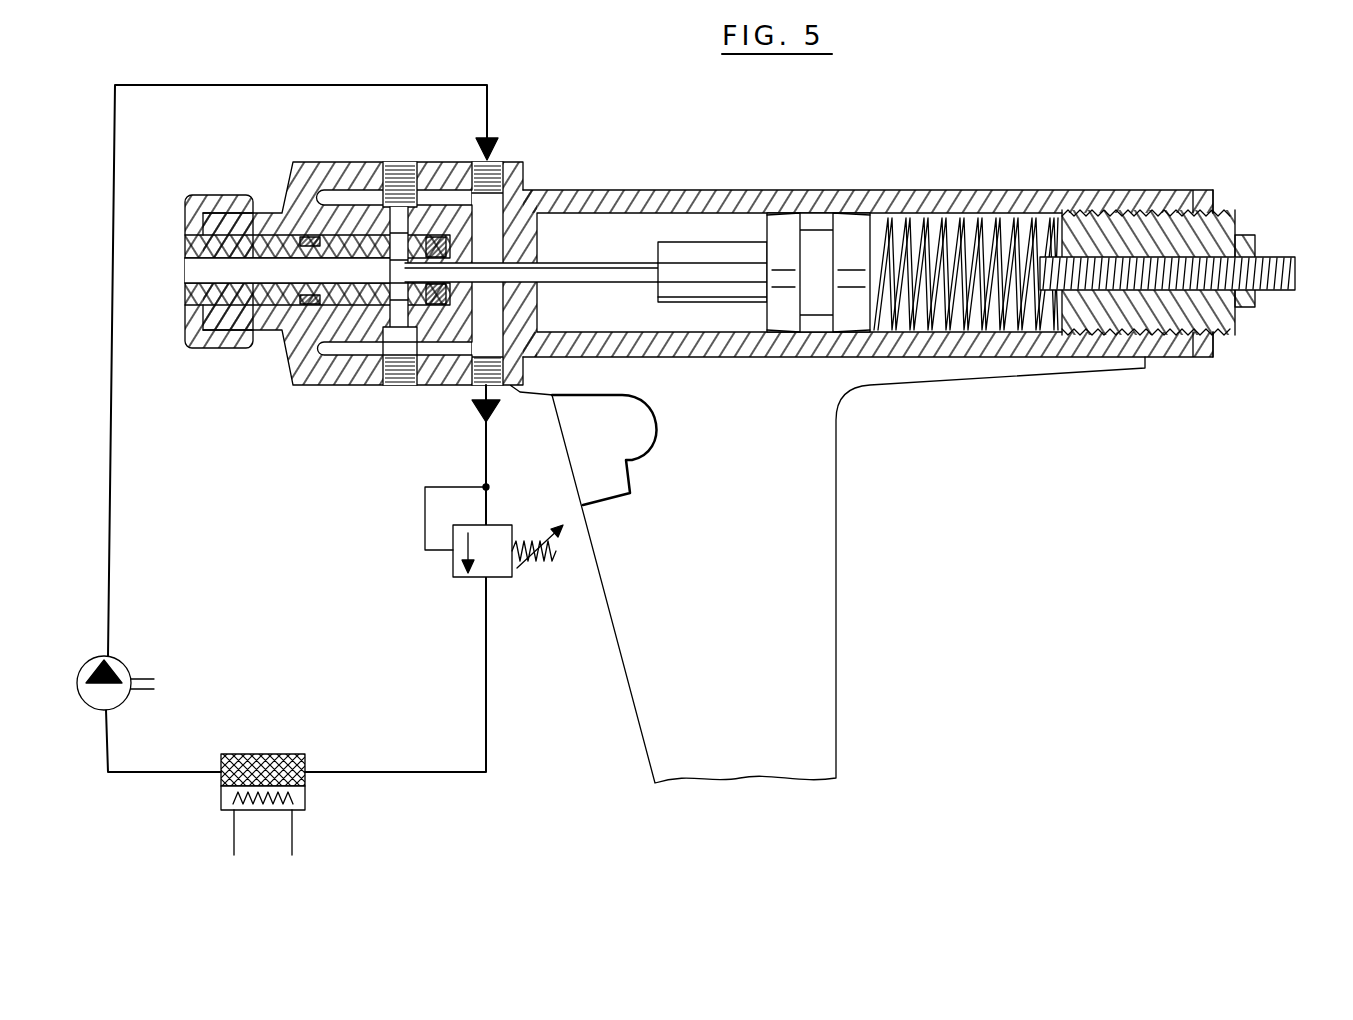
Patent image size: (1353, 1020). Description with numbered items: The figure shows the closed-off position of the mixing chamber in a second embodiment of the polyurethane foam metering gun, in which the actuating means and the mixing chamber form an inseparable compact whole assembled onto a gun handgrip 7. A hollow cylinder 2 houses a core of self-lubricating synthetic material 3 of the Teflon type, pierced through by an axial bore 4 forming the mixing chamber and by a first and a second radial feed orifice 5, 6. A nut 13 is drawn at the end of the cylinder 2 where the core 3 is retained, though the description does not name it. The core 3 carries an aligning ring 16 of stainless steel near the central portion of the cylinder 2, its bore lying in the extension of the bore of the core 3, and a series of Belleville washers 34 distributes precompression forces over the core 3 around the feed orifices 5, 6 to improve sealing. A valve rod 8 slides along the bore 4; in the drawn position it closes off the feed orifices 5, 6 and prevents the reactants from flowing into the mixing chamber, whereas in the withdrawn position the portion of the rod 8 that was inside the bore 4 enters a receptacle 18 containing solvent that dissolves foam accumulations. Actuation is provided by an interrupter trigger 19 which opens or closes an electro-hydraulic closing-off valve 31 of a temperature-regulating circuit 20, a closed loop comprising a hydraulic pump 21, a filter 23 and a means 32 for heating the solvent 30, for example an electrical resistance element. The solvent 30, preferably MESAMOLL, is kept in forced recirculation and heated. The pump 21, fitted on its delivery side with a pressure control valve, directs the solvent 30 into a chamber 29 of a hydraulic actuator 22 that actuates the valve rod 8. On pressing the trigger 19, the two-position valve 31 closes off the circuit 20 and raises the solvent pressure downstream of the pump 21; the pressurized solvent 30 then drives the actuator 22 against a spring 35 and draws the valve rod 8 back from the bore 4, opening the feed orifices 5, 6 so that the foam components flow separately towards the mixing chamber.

The hollow cylinder 2 is at (233, 313).
The core of self-lubricating synthetic material 3 is at (190, 253).
The axial bore 4 is at (248, 262).
The first radial feed orifice 5 is at (405, 175).
The second radial feed orifice 6 is at (406, 380).
The handgrip 7 is at (814, 514).
The valve rod 8 is at (615, 268).
The nut 13 is at (203, 205).
The aligning ring 16 is at (443, 195).
The receptacle 18 is at (660, 232).
The interrupter trigger 19 is at (595, 475).
The temperature-regulating circuit 20 is at (448, 76).
The hydraulic pump 21 is at (125, 664).
The hydraulic actuator 22 is at (787, 238).
The filter 23 is at (265, 752).
The chamber 29 is at (508, 255).
The solvent 30 is at (352, 195).
The electro-hydraulic closing-off valve 31 is at (497, 537).
The means for heating the solvent 32 is at (303, 802).
The Belleville washers 34 is at (310, 235).
The spring 35 is at (975, 230).